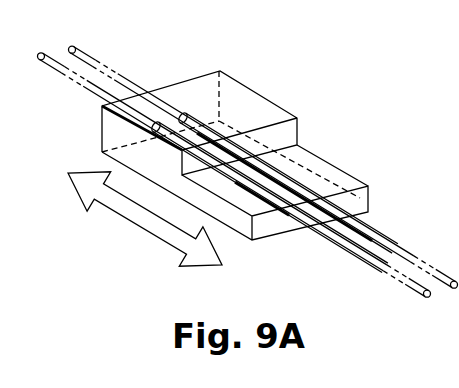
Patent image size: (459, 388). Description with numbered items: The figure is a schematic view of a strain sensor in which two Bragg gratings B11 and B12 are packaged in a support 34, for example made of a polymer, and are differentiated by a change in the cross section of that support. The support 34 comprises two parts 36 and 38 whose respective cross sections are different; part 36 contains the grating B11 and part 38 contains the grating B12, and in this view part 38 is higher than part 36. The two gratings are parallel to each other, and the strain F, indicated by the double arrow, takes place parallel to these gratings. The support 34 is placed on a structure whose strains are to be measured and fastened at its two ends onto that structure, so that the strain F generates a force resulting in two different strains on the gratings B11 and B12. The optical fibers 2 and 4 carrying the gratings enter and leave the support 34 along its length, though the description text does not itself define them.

The optical fiber 2 is at (58, 70).
The optical fiber 4 is at (97, 63).
The support 34 is at (235, 129).
The part of the support 36 is at (322, 156).
The part of the support 38 is at (262, 92).
The Bragg grating B11 is at (252, 200).
The Bragg grating B12 is at (198, 129).
The strain F is at (138, 222).